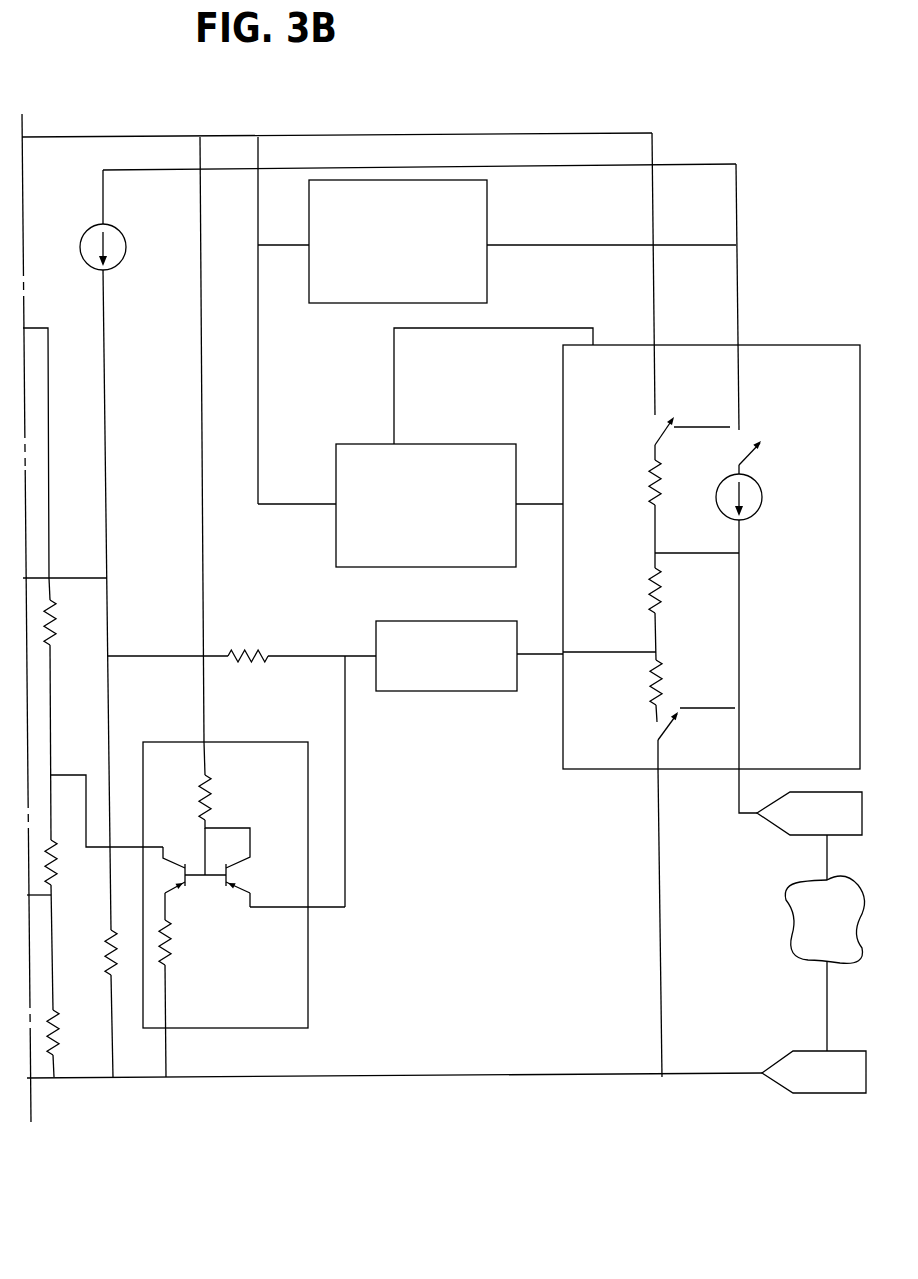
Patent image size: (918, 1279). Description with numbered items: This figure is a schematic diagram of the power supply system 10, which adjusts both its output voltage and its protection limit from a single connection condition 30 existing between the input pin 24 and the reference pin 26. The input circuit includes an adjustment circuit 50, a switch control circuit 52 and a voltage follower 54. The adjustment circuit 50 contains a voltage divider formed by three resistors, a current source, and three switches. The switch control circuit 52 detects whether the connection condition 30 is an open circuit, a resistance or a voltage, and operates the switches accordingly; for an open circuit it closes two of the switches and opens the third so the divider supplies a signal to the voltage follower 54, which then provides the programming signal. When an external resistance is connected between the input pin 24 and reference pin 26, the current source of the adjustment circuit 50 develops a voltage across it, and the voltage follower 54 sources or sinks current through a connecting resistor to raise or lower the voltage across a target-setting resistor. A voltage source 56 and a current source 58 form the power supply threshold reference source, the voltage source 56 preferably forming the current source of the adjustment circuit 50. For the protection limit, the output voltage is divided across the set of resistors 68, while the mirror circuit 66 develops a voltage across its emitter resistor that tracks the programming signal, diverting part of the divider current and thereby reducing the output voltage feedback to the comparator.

The power supply system 10 is at (395, 100).
The input pin 24 is at (778, 842).
The reference pin 26 is at (780, 1060).
The connection condition 30 is at (790, 935).
The adjustment circuit 50 is at (602, 773).
The switch control circuit 52 is at (437, 442).
The voltage follower 54 is at (437, 693).
The voltage source 56 is at (487, 270).
The current source 58 is at (125, 257).
The mirror circuit 66 is at (309, 982).
The set of resistors 68 is at (68, 735).